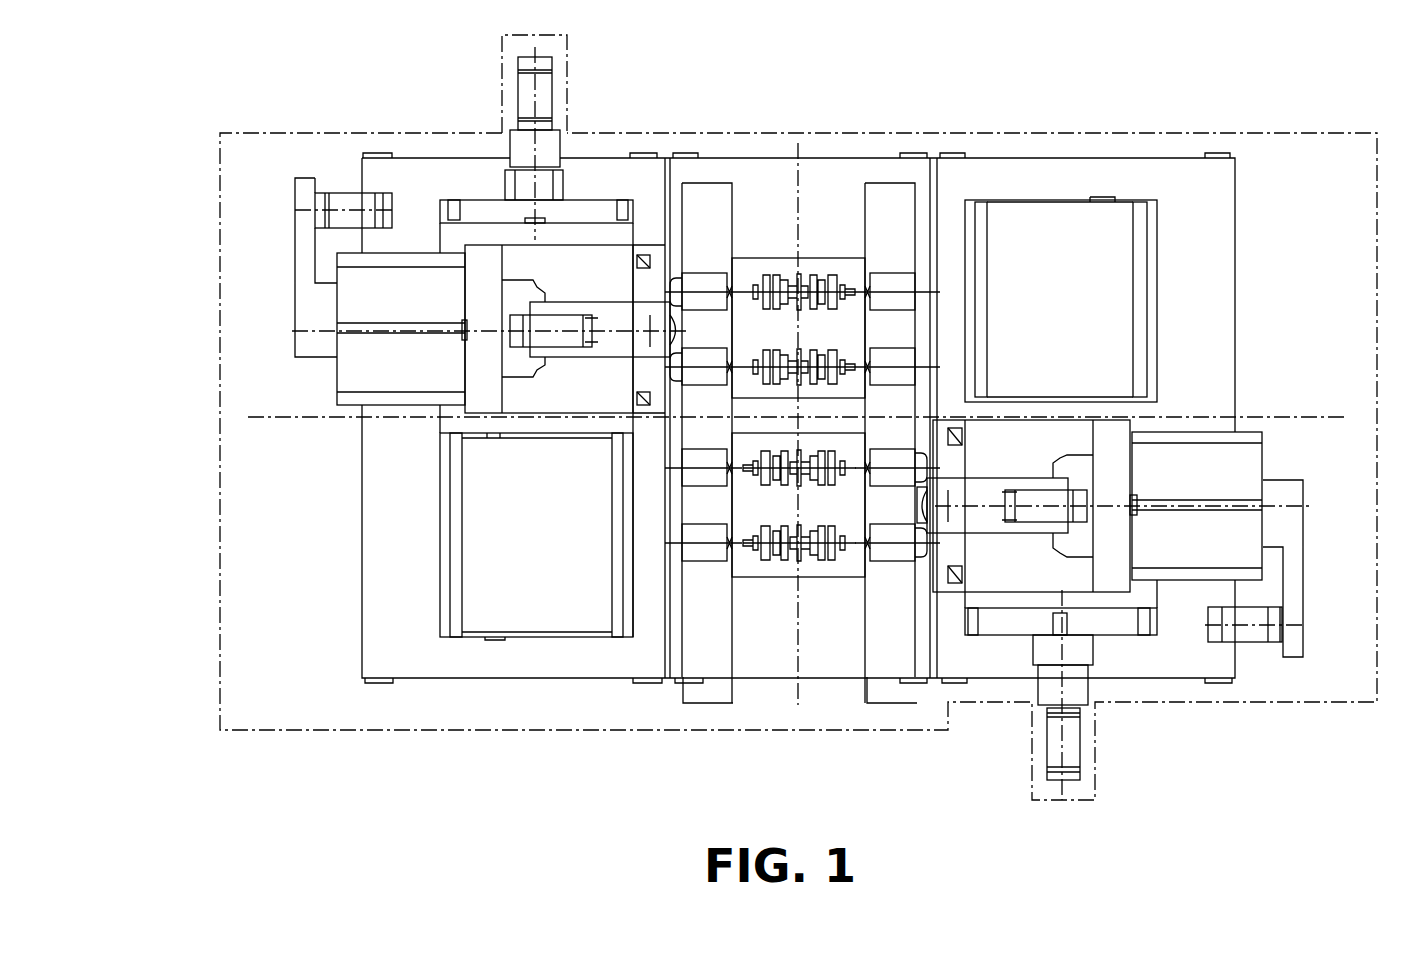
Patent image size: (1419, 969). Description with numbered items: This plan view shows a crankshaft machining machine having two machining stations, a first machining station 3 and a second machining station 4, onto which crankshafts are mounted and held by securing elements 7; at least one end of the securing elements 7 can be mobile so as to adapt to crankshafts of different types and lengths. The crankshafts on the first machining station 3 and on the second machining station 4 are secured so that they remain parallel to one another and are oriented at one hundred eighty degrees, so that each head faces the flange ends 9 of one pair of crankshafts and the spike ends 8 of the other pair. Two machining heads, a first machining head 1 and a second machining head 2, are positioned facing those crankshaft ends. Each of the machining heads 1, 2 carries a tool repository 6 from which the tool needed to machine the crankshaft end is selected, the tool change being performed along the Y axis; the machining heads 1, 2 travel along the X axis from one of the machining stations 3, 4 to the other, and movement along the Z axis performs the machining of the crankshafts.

The first machining head 1 is at (1050, 502).
The second machining head 2 is at (377, 367).
The first machining station 3 is at (807, 512).
The second machining station 4 is at (788, 323).
The tool repository 6 is at (733, 693).
The securing elements 7 is at (845, 330).
The spike ends 8 is at (860, 287).
The flange ends 9 is at (755, 288).